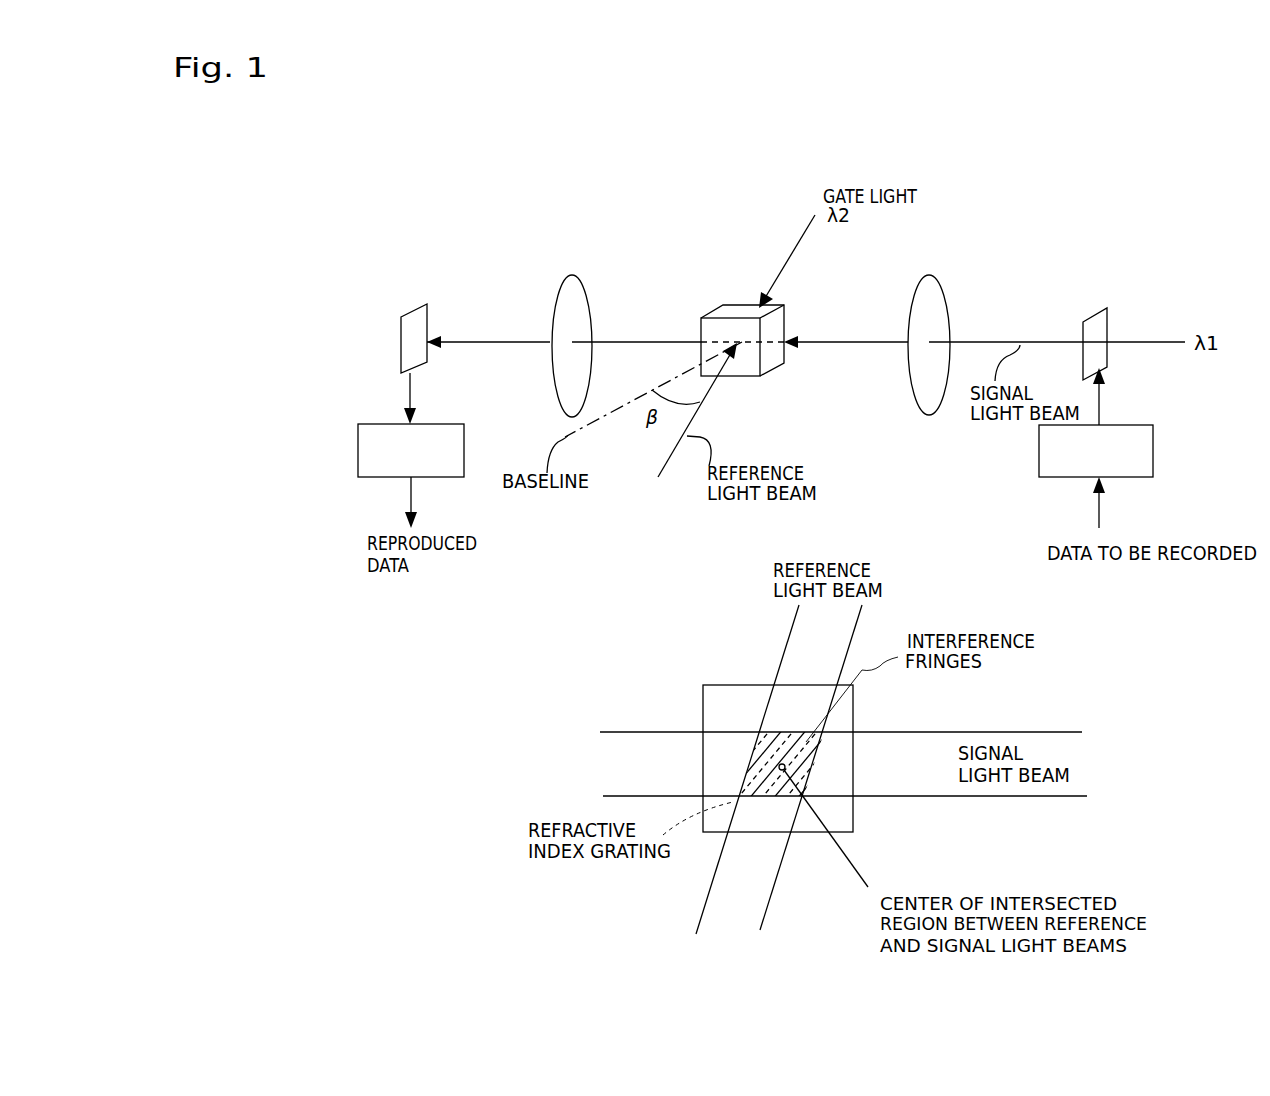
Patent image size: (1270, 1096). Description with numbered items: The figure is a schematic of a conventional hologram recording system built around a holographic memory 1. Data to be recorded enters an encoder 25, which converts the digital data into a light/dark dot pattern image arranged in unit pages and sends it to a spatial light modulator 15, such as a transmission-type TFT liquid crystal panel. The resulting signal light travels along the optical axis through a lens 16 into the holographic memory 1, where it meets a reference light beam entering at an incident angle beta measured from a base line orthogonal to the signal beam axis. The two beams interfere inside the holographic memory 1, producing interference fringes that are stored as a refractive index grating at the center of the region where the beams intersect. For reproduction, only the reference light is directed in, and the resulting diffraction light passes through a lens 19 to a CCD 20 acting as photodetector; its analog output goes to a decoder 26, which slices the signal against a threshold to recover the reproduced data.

The holographic memory 1 is at (722, 310).
The spatial light modulator 15 is at (1095, 320).
The lens 16 is at (930, 281).
The lens 19 is at (575, 286).
The CCD 20 is at (423, 322).
The encoder 25 is at (1153, 440).
The decoder 26 is at (358, 452).